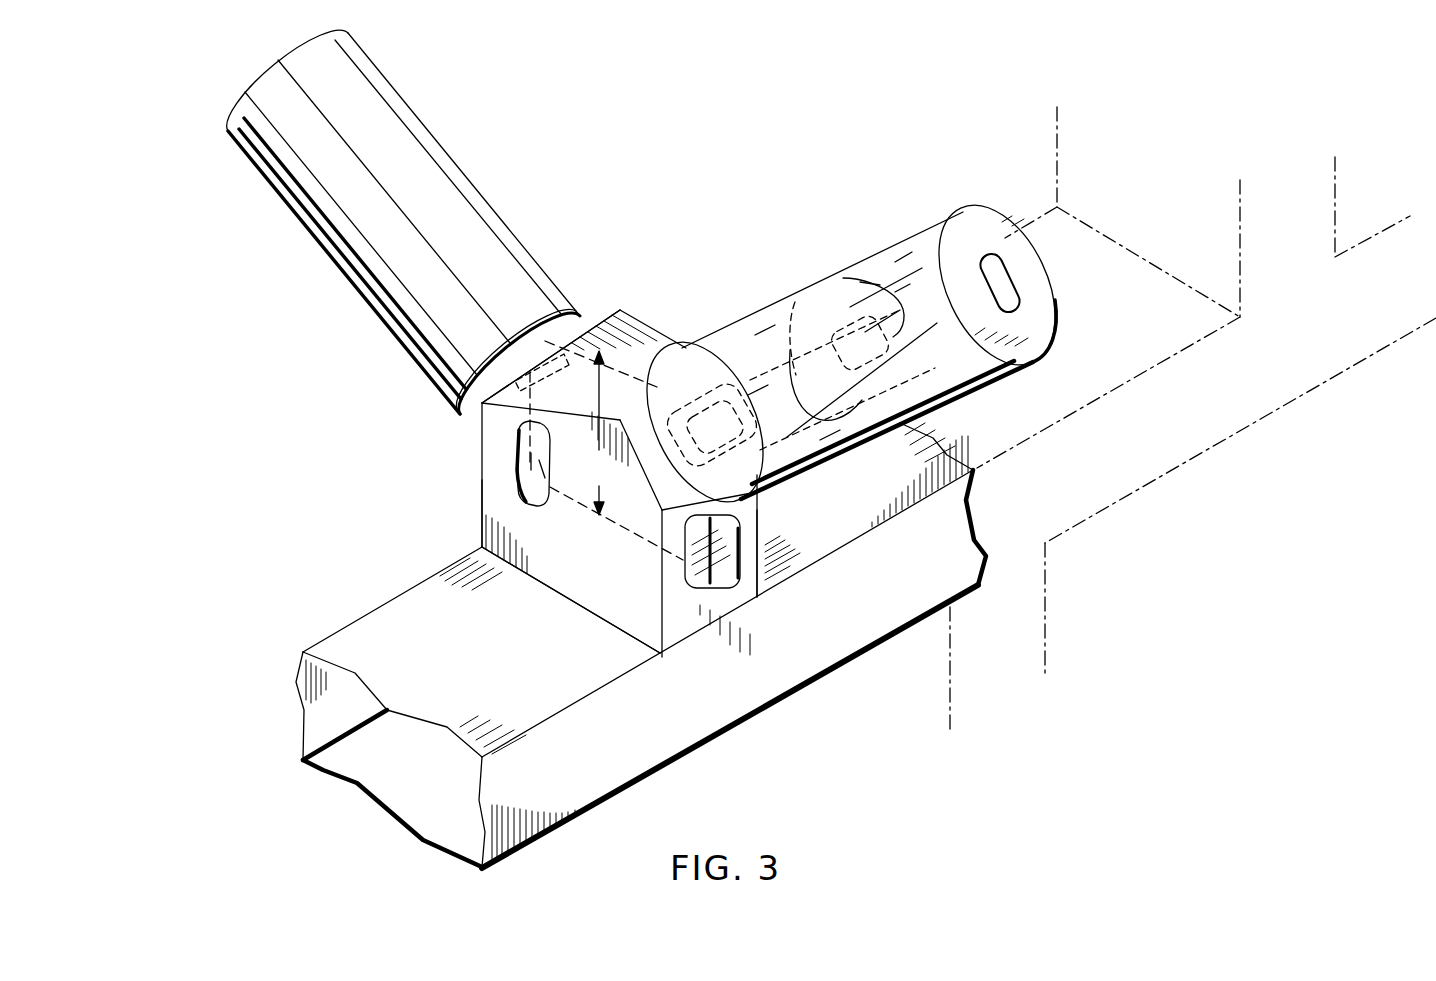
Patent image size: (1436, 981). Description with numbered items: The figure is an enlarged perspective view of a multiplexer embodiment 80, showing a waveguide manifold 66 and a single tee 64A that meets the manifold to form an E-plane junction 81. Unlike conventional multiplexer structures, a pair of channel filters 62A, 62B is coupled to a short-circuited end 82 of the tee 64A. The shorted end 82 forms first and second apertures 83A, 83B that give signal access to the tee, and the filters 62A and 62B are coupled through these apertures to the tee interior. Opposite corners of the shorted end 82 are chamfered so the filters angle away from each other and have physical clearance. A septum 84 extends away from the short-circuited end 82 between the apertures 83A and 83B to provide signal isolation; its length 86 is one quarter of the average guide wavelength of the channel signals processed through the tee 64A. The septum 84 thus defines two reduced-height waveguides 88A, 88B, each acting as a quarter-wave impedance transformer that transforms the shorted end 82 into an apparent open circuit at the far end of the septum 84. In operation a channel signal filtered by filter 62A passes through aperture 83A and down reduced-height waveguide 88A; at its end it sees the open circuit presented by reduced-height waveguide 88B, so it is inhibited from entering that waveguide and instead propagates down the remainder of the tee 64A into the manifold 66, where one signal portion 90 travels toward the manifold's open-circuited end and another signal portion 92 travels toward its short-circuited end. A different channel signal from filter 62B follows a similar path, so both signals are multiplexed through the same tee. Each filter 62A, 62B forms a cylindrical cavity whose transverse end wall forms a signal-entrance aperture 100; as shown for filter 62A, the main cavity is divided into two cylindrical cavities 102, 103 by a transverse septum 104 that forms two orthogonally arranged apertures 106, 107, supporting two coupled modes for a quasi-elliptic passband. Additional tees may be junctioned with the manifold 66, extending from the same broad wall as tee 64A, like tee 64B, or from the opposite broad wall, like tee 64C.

The channel filter 62A is at (933, 233).
The channel filter 62B is at (353, 237).
The tee 64A is at (487, 502).
The tee 64B is at (1337, 200).
The tee 64C is at (1047, 612).
The manifold 66 is at (762, 653).
The multiplexer embodiment 80 is at (338, 453).
The E-plane junction 81 is at (458, 544).
The short-circuited end 82 is at (629, 343).
The first aperture 83A is at (758, 400).
The second aperture 83B is at (524, 385).
The septum 84 is at (530, 465).
The septum length 86 is at (599, 433).
The reduced-height waveguide 88A is at (758, 537).
The reduced-height waveguide 88B is at (708, 573).
The signal portion 90 is at (1010, 396).
The signal portion 92 is at (393, 752).
The signal-entrance aperture 100 is at (1030, 272).
The cylindrical cavity 102 is at (913, 235).
The cylindrical cavity 103 is at (750, 335).
The transverse septum 104 is at (830, 430).
The aperture 106 is at (851, 223).
The aperture 107 is at (843, 278).